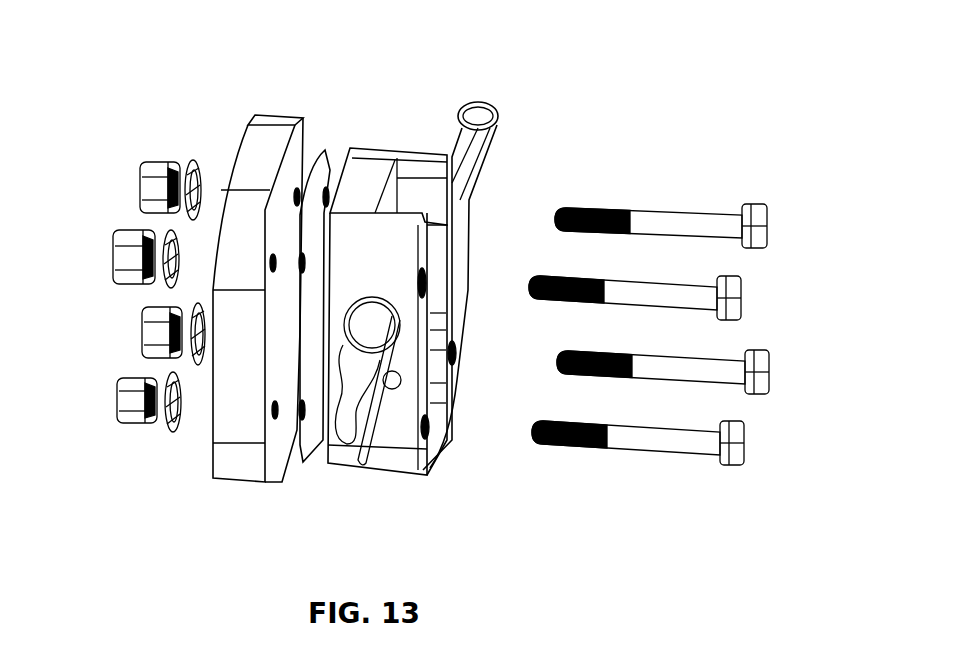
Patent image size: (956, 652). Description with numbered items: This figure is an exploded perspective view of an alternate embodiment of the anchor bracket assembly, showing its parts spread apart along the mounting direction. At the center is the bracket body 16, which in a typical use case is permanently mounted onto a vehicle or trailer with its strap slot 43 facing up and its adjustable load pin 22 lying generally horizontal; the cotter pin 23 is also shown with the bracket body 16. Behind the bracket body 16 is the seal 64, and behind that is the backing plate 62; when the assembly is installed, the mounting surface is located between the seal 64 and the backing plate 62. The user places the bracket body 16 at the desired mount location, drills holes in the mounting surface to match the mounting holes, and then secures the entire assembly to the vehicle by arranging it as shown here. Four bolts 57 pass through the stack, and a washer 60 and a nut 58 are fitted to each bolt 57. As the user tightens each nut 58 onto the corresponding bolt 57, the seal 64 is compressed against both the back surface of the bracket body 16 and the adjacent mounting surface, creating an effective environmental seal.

The bracket body 16 is at (430, 460).
The adjustable load pin 22 is at (480, 157).
The cotter pin 23 is at (387, 353).
The strap slot 43 is at (413, 210).
The bolt 57 is at (767, 225).
The nut 58 is at (146, 165).
The washer 60 is at (195, 165).
The backing plate 62 is at (250, 118).
The seal 64 is at (332, 160).